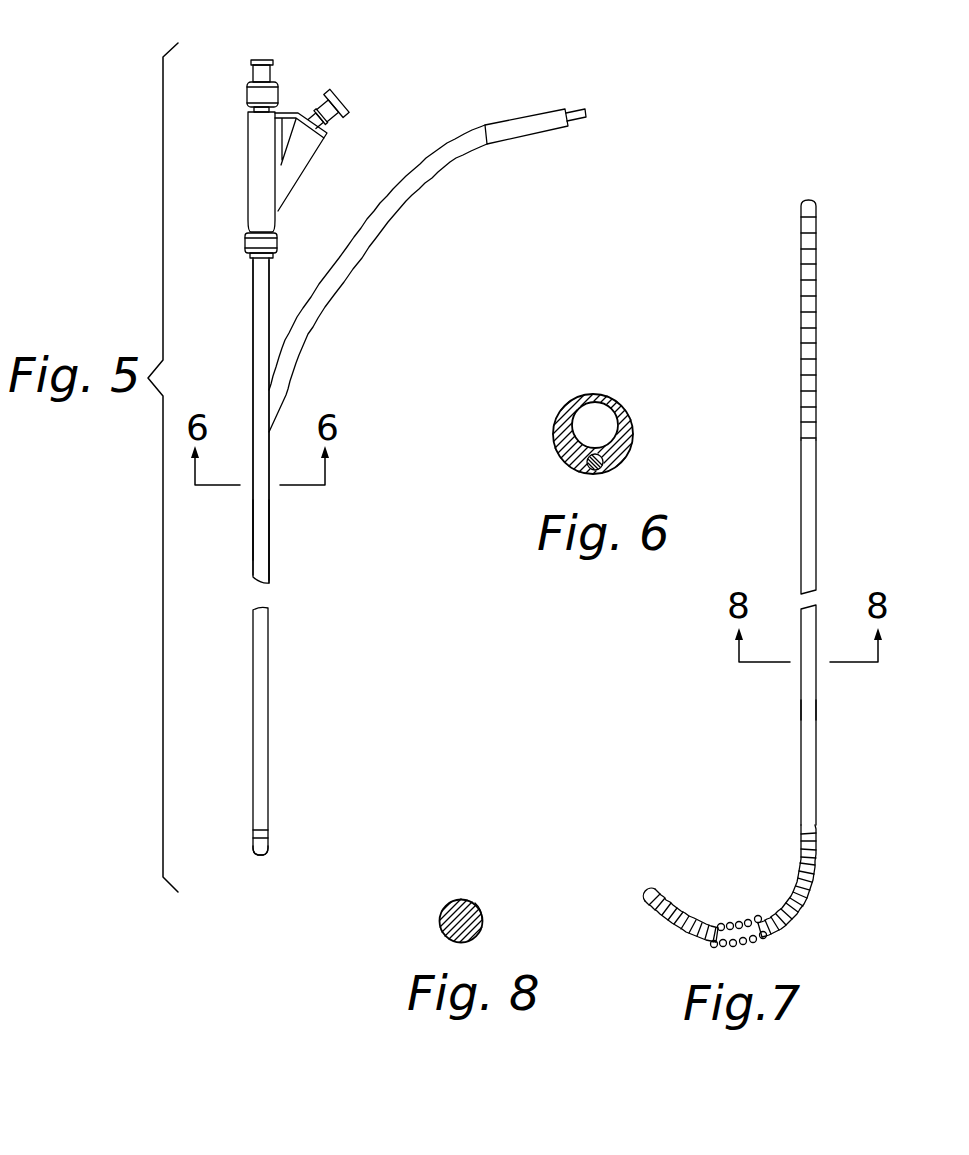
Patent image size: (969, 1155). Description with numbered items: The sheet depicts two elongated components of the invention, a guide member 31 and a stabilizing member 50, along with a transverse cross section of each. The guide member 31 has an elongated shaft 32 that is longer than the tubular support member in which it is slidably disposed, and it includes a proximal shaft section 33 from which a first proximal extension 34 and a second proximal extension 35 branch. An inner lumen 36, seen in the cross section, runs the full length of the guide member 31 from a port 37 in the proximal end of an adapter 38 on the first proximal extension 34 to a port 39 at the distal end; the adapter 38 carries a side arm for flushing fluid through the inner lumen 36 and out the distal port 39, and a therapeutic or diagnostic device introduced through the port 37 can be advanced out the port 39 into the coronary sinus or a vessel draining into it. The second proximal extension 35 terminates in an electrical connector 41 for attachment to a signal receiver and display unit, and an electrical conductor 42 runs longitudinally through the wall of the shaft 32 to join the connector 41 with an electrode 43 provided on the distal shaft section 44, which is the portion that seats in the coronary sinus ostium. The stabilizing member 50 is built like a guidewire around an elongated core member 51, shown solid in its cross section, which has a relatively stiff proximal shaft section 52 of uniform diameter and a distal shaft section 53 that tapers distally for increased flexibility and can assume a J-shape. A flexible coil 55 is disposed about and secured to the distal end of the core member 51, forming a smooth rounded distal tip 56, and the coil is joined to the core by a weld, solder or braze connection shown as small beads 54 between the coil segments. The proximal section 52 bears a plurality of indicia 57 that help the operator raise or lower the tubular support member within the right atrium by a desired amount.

In FIG. 5, the guide member 31 is at (363, 474).
In FIG. 5, the elongated shaft 32 is at (269, 538).
In FIG. 6, the elongated shaft 32 is at (633, 432).
In FIG. 5, the proximal shaft section 33 is at (253, 525).
In FIG. 5, the first proximal extension 34 is at (253, 365).
In FIG. 5, the second proximal extension 35 is at (383, 208).
In FIG. 6, the inner lumen 36 is at (607, 415).
In FIG. 5, the port 37 is at (258, 59).
In FIG. 5, the adapter 38 is at (257, 173).
In FIG. 5, the port 39 is at (258, 856).
In FIG. 5, the electrical connector 41 is at (585, 111).
In FIG. 6, the electrical conductor 42 is at (596, 470).
In FIG. 5, the electrode 43 is at (268, 835).
In FIG. 5, the distal shaft section 44 is at (268, 735).
In FIG. 7, the stabilizing member 50 is at (849, 449).
In FIG. 7, the elongated core member 51 is at (810, 720).
In FIG. 8, the elongated core member 51 is at (470, 925).
In FIG. 7, the proximal shaft section 52 is at (817, 500).
In FIG. 8, the proximal shaft section 52 is at (478, 906).
In FIG. 7, the distal shaft section 53 is at (816, 814).
In FIG. 7, the marker beads 54 is at (767, 936).
In FIG. 7, the flexible coil 55 is at (686, 915).
In FIG. 7, the distal tip 56 is at (650, 888).
In FIG. 7, the indicia 57 is at (817, 287).